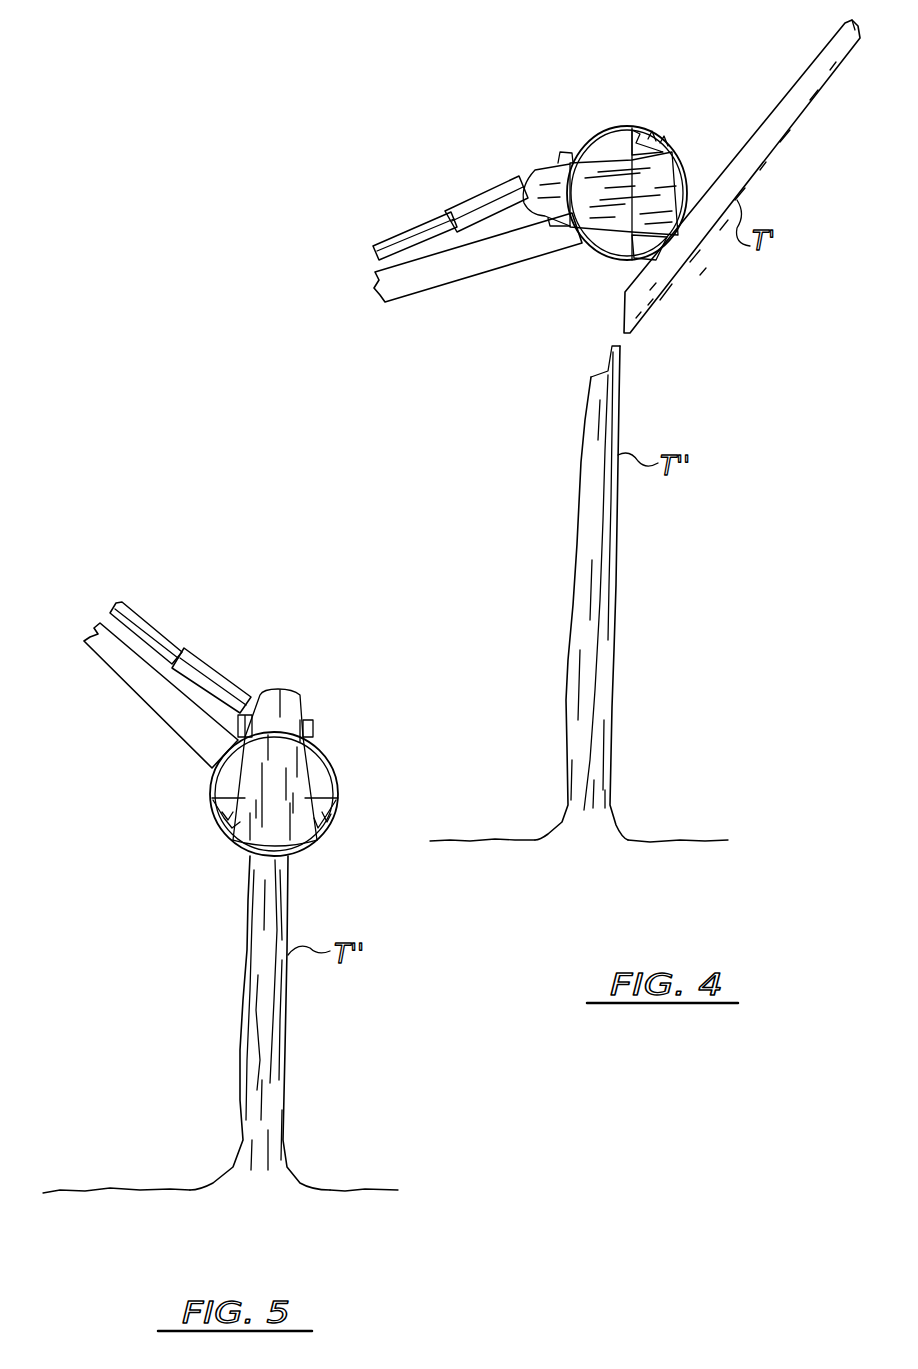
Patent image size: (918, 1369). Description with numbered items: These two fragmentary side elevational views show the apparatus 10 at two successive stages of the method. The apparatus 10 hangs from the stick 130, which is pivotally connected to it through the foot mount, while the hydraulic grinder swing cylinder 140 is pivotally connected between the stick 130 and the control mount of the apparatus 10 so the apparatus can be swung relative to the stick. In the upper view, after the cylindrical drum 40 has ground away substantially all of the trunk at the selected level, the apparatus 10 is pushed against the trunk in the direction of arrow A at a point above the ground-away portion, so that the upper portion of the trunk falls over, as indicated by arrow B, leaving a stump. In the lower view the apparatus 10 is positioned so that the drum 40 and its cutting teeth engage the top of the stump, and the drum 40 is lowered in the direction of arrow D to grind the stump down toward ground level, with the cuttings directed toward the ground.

In FIG. 4, the apparatus 10 is at (628, 126).
In FIG. 5, the apparatus 10 is at (334, 737).
In FIG. 5, the cylindrical drum 40 is at (346, 813).
In FIG. 4, the stick 130 is at (508, 263).
In FIG. 5, the stick 130 is at (115, 673).
In FIG. 4, the hydraulic grinder swing cylinder 140 is at (410, 225).
In FIG. 5, the hydraulic grinder swing cylinder 140 is at (210, 660).
In FIG. 4, the arrow A is at (485, 180).
In FIG. 4, the arrow B is at (768, 92).
In FIG. 5, the arrow D is at (278, 655).